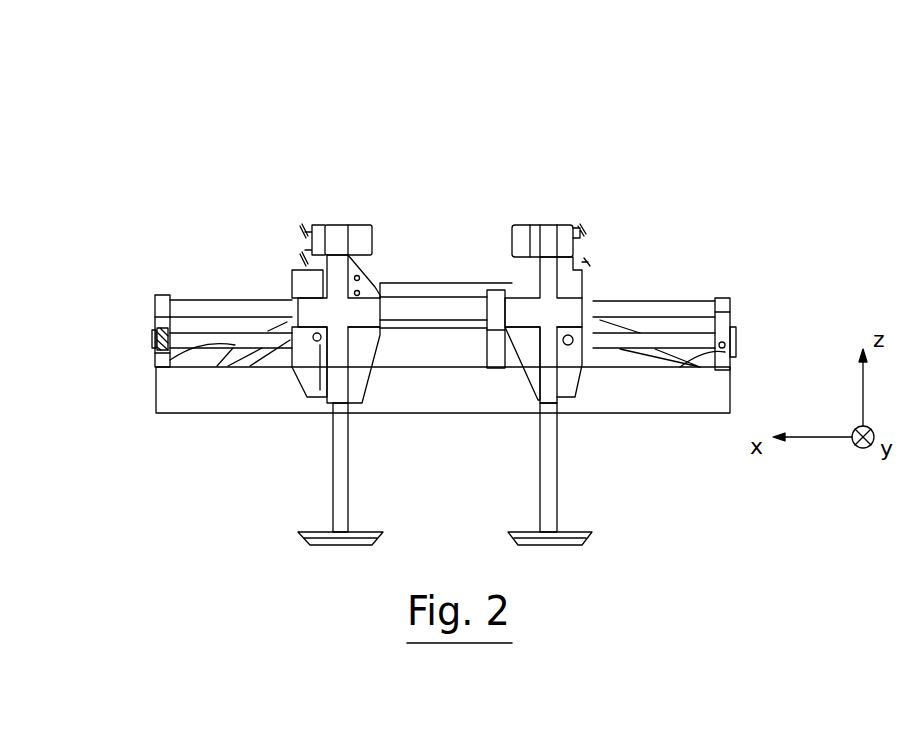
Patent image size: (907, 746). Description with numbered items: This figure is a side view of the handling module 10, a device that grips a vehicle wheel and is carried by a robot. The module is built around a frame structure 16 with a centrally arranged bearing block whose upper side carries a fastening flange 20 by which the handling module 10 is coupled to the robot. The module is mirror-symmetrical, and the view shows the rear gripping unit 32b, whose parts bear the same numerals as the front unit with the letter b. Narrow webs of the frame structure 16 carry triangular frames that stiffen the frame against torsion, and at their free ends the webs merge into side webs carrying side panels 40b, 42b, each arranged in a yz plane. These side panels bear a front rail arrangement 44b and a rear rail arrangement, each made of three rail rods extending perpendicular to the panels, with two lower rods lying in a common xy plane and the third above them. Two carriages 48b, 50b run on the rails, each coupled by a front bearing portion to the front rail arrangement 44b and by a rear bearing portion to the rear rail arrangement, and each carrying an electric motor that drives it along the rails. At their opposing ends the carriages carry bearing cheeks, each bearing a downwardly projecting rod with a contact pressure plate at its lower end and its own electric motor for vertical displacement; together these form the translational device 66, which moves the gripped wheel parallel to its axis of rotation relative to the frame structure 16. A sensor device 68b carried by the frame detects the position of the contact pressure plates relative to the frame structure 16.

The handling module 10 is at (137, 128).
The frame structure 16 is at (160, 396).
The fastening flange 20 is at (433, 290).
The rear gripping unit 32b is at (636, 264).
The side panel 40b is at (734, 318).
The side panel 42b is at (165, 295).
The front rail arrangement 44b is at (699, 290).
The carriage 48b is at (596, 283).
The carriage 50b is at (296, 287).
The translational device 66 is at (254, 505).
The sensor device 68b is at (287, 389).